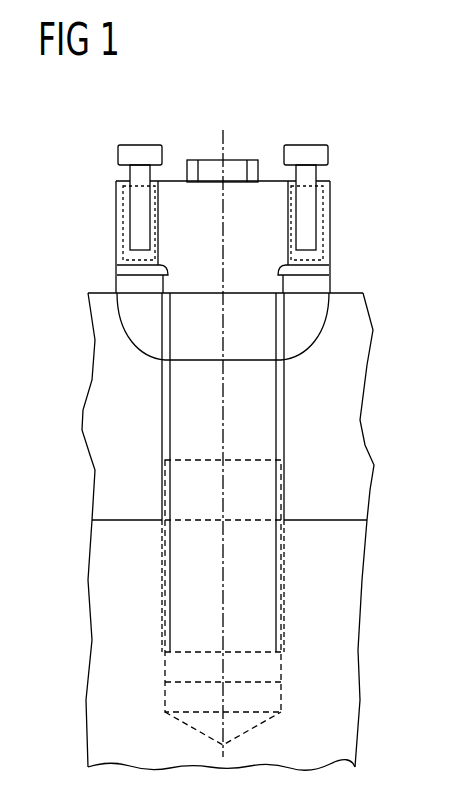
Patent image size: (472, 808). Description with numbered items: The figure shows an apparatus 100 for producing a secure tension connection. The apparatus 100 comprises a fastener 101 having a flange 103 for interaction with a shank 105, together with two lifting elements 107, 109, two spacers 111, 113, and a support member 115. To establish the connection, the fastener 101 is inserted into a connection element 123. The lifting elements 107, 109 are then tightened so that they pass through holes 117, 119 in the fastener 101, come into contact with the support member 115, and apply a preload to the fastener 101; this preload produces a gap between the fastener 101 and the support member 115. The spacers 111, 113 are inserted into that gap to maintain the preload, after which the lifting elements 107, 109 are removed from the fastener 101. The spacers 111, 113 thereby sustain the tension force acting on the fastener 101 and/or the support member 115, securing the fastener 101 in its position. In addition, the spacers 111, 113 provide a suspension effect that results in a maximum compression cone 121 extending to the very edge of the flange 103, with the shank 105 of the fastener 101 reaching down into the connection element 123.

The apparatus 100 is at (345, 100).
The fastener 101 is at (175, 410).
The flange 103 is at (173, 185).
The shank 105 is at (250, 542).
The lifting element 107 is at (305, 195).
The lifting element 109 is at (137, 197).
The spacer 111 is at (116, 267).
The spacer 113 is at (330, 268).
The support member 115 is at (320, 292).
The hole 117 is at (328, 228).
The hole 119 is at (125, 230).
The maximum compression cone 121 is at (294, 342).
The connection element 123 is at (361, 441).